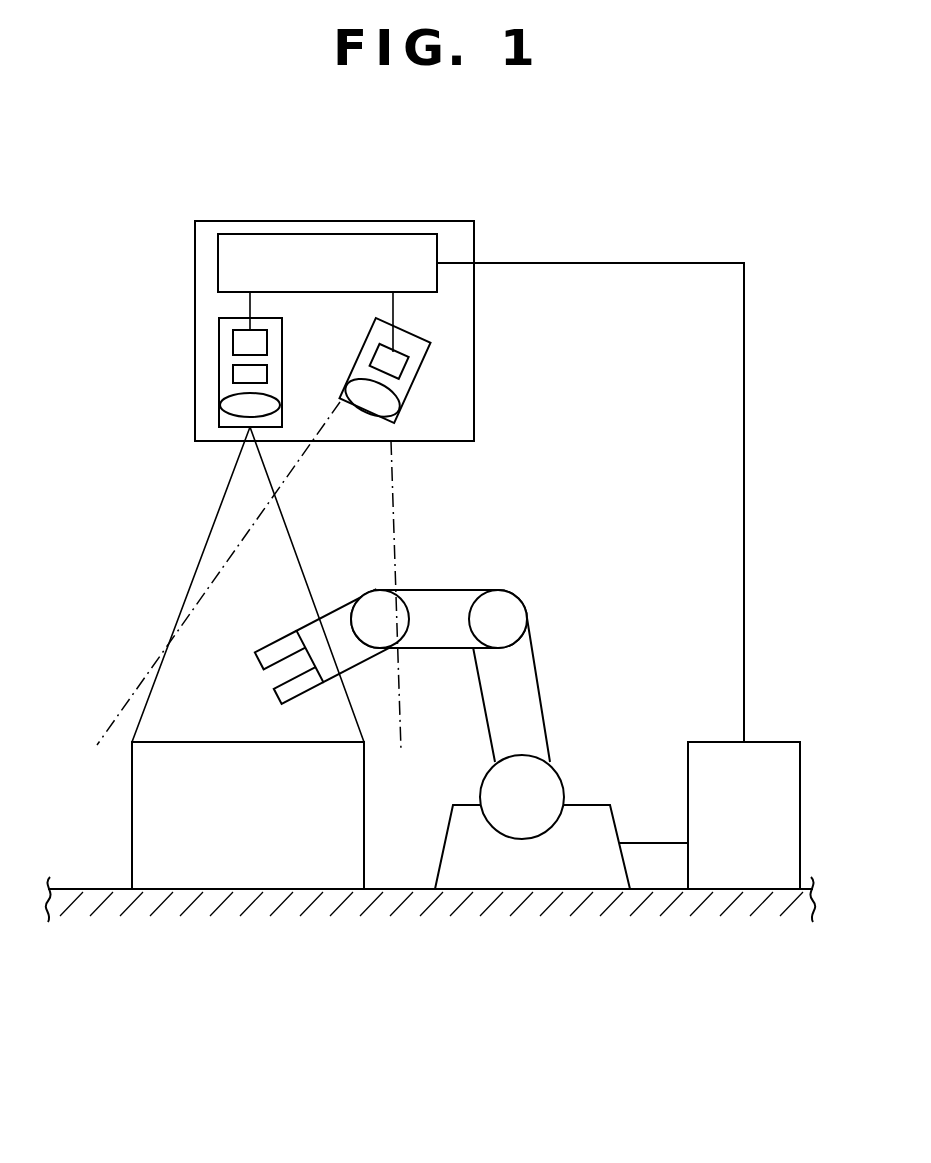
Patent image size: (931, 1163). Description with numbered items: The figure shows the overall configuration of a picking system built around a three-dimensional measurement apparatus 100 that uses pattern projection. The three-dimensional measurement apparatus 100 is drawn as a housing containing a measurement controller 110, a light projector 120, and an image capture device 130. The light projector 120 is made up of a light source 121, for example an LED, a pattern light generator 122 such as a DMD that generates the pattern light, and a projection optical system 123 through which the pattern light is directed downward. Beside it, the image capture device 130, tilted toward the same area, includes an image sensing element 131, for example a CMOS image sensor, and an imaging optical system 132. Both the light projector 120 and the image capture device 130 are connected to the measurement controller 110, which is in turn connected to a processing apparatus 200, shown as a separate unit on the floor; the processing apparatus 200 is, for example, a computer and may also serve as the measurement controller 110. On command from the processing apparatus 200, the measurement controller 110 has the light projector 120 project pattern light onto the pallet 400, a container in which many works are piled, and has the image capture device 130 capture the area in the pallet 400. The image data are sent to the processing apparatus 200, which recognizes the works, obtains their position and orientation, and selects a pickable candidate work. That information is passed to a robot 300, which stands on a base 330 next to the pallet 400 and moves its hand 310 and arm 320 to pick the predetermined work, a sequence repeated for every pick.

The three-dimensional measurement apparatus 100 is at (423, 221).
The measurement controller 110 is at (218, 263).
The light projector 120 is at (219, 327).
The light source 121 is at (233, 342).
The pattern light generator 122 is at (233, 372).
The projection optical system 123 is at (228, 412).
The image capture device 130 is at (430, 353).
The image sensing element 131 is at (405, 372).
The imaging optical system 132 is at (397, 392).
The processing apparatus 200 is at (795, 742).
The robot 300 is at (443, 759).
The hand 310 is at (336, 600).
The arm 320 is at (458, 590).
The base 330 is at (600, 805).
The pallet 400 is at (132, 813).